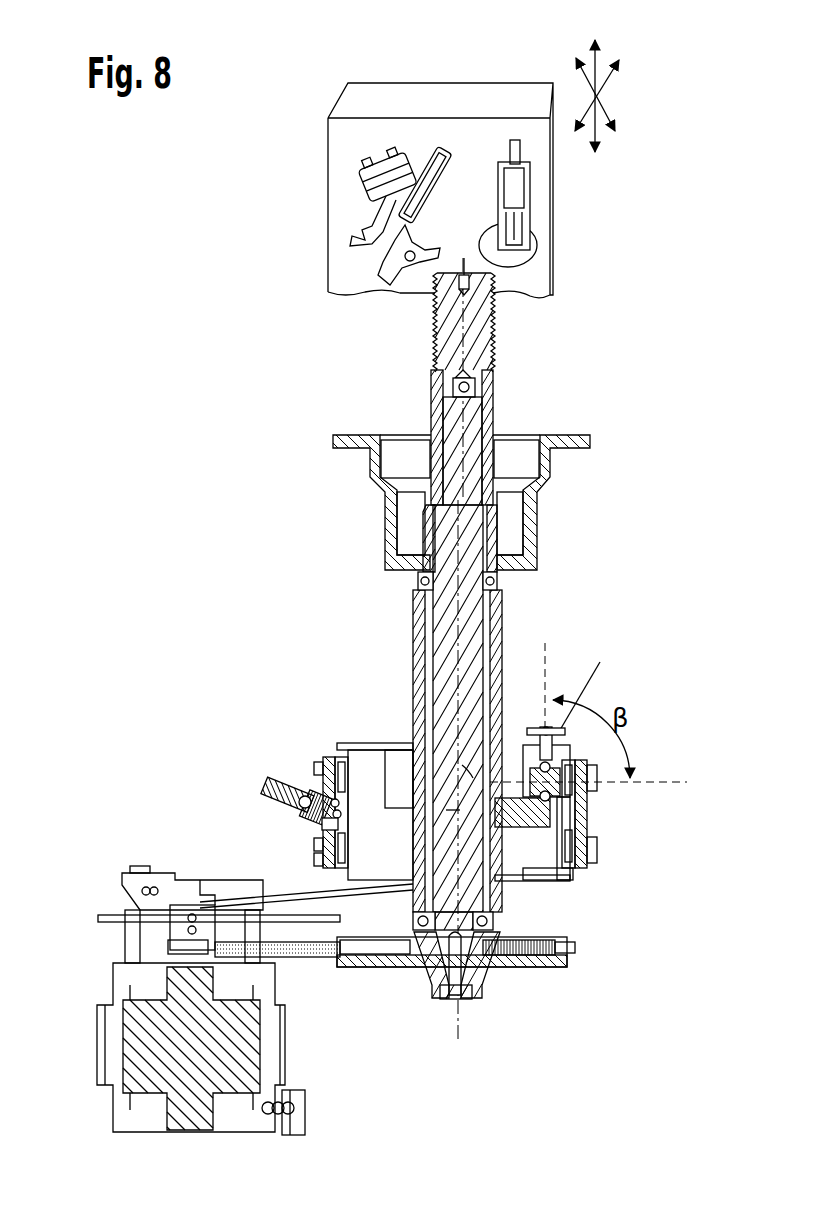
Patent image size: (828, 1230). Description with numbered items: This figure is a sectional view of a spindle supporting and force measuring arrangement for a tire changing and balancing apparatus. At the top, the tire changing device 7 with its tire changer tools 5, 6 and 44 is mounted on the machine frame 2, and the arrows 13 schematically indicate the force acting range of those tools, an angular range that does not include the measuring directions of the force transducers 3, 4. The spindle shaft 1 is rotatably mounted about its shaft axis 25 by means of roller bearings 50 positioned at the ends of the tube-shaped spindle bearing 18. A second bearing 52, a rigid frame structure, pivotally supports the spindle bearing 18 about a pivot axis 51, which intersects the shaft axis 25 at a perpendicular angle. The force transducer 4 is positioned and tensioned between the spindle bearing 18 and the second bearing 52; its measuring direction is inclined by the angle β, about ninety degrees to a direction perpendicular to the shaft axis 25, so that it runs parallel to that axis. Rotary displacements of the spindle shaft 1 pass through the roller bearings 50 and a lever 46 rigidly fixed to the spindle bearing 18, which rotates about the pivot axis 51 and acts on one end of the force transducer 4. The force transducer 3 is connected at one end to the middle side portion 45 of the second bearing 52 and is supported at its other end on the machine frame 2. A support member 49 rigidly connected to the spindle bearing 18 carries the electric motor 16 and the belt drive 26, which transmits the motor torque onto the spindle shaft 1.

The spindle shaft 1 is at (443, 668).
The machine frame 2 is at (403, 98).
The force transducer 3 is at (310, 790).
The force transducer 4 is at (595, 797).
The tire changer tool 5 is at (375, 220).
The tire changer tool 6 is at (383, 270).
The tire changing device 7 is at (287, 132).
The arrows 13 is at (600, 97).
The electric motor 16 is at (310, 1068).
The spindle bearing 18 is at (413, 718).
The shaft axis 25 is at (482, 608).
The belt drive 26 is at (298, 958).
The tire changer tool 44 is at (548, 258).
The middle side portion 45 is at (315, 827).
The lever 46 is at (300, 793).
The support member 49 is at (307, 900).
The roller bearings 50 is at (418, 580).
The pivot axis 51 is at (453, 812).
The second bearing 52 is at (545, 870).